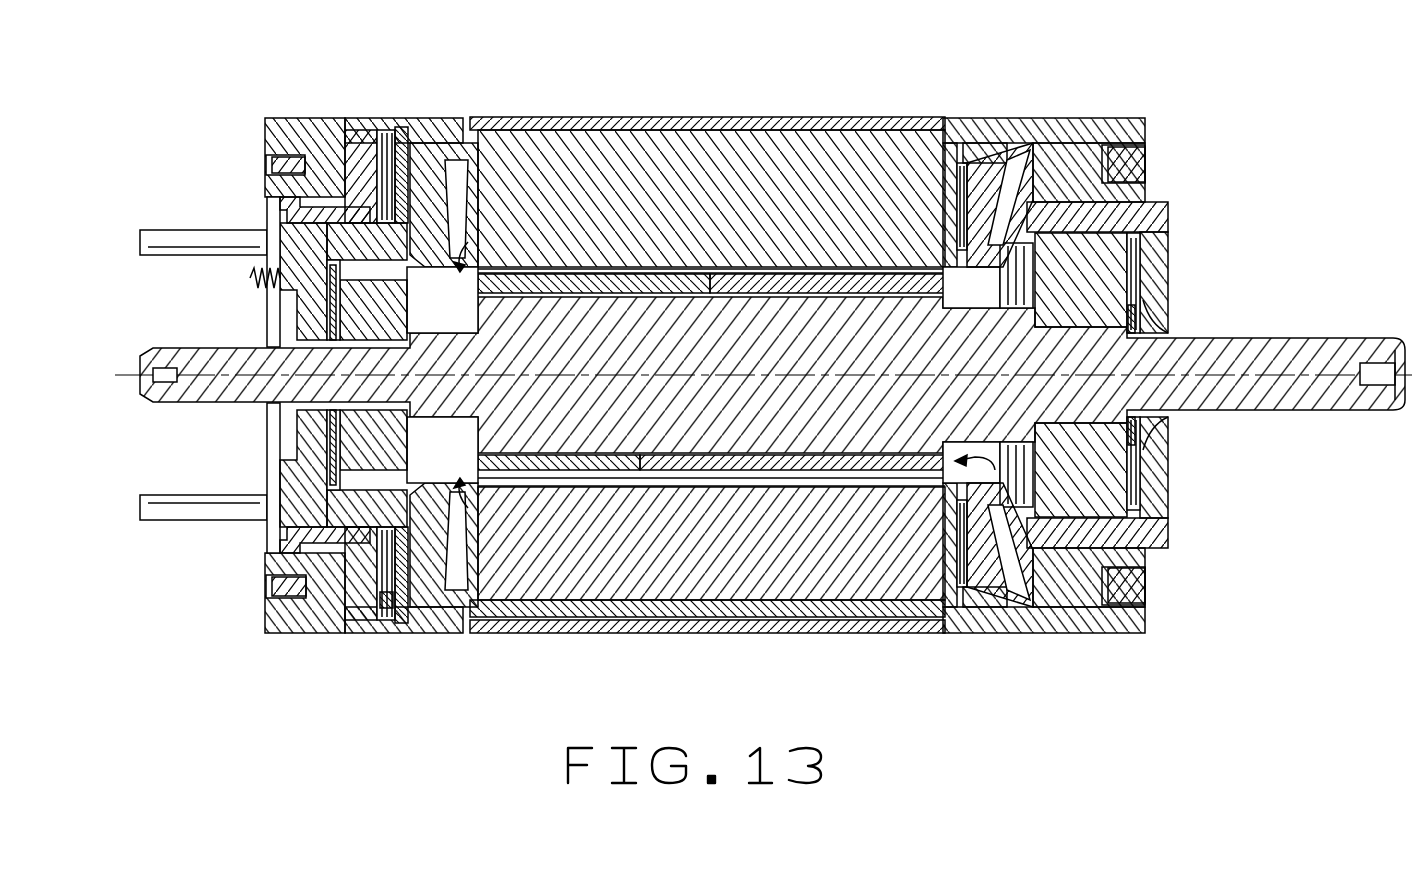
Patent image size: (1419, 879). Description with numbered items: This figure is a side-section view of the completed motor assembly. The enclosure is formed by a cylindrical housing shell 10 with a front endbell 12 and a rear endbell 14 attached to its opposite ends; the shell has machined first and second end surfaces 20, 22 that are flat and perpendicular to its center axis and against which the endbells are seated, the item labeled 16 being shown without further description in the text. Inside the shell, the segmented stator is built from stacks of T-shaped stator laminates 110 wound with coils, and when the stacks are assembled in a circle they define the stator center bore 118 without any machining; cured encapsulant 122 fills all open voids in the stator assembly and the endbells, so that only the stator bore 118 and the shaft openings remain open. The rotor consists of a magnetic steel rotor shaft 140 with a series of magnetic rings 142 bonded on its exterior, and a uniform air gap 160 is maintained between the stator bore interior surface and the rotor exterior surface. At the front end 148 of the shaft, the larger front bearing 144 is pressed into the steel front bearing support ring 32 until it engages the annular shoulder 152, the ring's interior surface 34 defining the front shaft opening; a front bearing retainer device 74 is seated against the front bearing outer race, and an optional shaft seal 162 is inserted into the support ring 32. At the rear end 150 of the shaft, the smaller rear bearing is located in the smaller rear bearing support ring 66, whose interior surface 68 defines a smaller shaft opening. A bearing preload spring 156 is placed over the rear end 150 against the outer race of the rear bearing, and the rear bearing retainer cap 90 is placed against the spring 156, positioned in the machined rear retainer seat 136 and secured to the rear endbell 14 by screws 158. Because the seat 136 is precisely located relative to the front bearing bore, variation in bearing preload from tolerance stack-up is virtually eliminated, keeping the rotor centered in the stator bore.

The housing shell 10 is at (577, 118).
The front endbell 12 is at (1018, 118).
The rear endbell 14 is at (330, 118).
The stator core 16 is at (817, 118).
The first end surface 20 is at (957, 120).
The second end surface 22 is at (451, 118).
The front bearing support ring 32 is at (1170, 528).
The front bearing support ring interior surface 34 is at (1118, 480).
The rear bearing support ring 66 is at (327, 282).
The rear bearing support ring interior surface 68 is at (363, 300).
The front bearing retainer device 74 is at (1130, 253).
The rear bearing retainer cap 90 is at (280, 257).
The stator laminates 110 is at (883, 118).
The stator center bore 118 is at (657, 278).
The cured encapsulant 122 is at (277, 162).
The rear retainer seat 136 is at (282, 470).
The rotor shaft 140 is at (632, 480).
The magnetic rings 142 is at (575, 482).
The front bearing 144 is at (1122, 450).
The front end of the rotor shaft 148 is at (1337, 410).
The rear end of the rotor shaft 150 is at (173, 347).
The annular shoulder 152 is at (1080, 530).
The bearing preload spring 156 is at (297, 423).
The screws 158 is at (287, 200).
The air gap 160 is at (455, 265).
The shaft seal 162 is at (1158, 266).